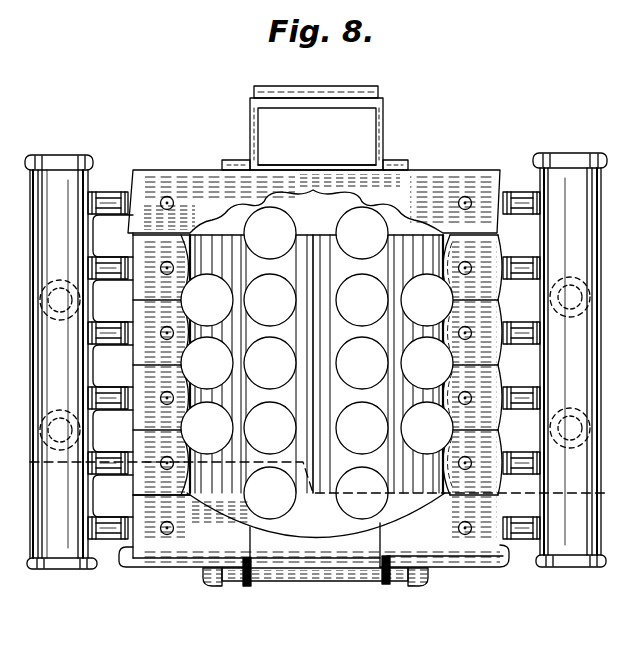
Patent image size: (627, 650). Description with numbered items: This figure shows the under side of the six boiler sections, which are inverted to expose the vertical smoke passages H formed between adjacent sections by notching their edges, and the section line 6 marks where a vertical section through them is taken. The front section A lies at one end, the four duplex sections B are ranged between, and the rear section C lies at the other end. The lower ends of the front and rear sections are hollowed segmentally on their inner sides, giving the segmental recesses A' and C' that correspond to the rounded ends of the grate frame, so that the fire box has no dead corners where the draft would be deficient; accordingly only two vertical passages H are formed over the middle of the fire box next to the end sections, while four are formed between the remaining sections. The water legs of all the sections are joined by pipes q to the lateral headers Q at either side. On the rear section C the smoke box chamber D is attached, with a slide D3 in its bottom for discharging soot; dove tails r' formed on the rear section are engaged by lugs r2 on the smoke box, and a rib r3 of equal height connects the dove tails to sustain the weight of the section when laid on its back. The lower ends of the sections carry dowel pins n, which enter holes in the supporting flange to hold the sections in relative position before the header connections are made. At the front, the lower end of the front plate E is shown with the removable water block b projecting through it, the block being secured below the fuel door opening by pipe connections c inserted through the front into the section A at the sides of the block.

The lateral header Q is at (40, 223).
The pipe q is at (116, 205).
The rear section C is at (314, 189).
The segmental recess C' is at (316, 219).
The smoke box chamber D is at (251, 127).
The slide D3 is at (317, 92).
The dove tail r' is at (234, 154).
The lug r2 is at (393, 160).
The rib r3 is at (324, 165).
The duplex section B is at (134, 248).
The vertical passage H is at (317, 363).
The front section A is at (171, 516).
The segmental recess A' is at (316, 515).
The water block b is at (386, 534).
The dowel pin n is at (458, 528).
The pipe connection c is at (229, 584).
The front plate E is at (160, 575).
The section line 6 is at (319, 478).